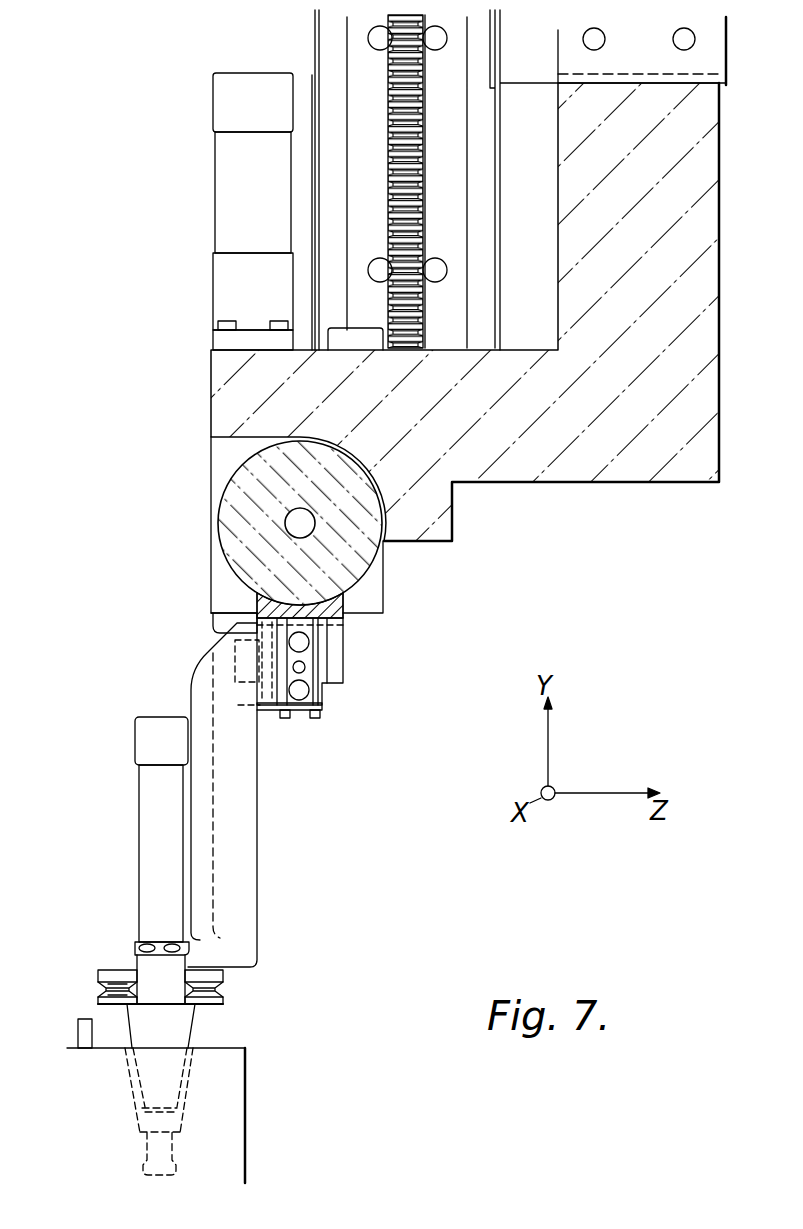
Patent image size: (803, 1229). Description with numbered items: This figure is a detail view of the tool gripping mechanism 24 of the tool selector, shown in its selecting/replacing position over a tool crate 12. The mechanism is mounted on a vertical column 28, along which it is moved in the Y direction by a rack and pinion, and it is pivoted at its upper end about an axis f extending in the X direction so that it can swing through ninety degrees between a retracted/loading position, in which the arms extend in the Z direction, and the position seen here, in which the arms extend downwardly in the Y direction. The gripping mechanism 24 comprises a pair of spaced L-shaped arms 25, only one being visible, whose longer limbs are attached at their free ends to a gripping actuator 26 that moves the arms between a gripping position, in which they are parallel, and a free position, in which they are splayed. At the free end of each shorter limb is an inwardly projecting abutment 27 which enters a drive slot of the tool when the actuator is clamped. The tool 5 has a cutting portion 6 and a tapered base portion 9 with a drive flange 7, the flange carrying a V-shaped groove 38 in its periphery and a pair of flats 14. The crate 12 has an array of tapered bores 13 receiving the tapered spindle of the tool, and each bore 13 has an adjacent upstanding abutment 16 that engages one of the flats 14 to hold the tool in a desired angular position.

The vertical column 28 is at (362, 87).
The tool gripping mechanism 24 is at (516, 503).
The pivot axis f is at (292, 523).
The gripping actuator 26 is at (324, 616).
The L-shaped arms 25 is at (240, 845).
The cutting portion 6 is at (152, 827).
The tool 5 is at (125, 912).
The inwardly projecting abutment 27 is at (153, 988).
The flats 14 is at (99, 969).
The V-shaped groove 38 is at (95, 988).
The drive flange 7 is at (135, 1022).
The upstanding abutment 16 is at (82, 1036).
The tool crate 12 is at (223, 1123).
The tapered bore 13 is at (132, 1092).
The base portion 9 is at (157, 1075).